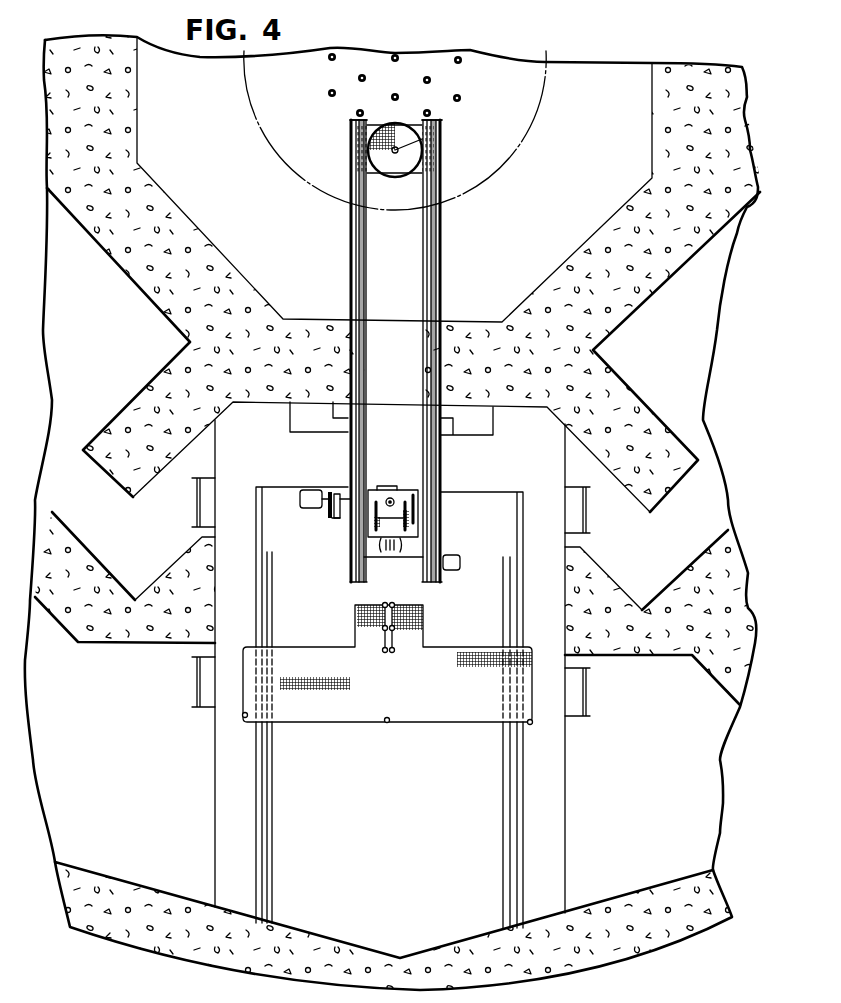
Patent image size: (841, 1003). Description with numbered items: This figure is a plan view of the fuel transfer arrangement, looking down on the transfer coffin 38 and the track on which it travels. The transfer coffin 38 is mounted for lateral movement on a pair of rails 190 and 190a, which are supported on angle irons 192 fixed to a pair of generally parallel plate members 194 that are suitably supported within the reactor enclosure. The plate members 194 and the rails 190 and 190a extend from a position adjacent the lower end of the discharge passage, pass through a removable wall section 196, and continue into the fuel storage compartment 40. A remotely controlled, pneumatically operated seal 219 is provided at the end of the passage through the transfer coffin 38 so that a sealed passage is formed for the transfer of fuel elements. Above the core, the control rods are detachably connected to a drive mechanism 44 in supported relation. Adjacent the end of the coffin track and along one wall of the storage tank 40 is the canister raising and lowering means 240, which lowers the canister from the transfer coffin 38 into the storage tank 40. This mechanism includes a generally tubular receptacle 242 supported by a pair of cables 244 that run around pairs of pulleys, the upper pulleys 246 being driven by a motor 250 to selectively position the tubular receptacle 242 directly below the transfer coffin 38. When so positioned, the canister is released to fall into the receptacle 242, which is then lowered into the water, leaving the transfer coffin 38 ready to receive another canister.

The transfer coffin 38 is at (381, 181).
The fuel storage compartment 40 is at (431, 820).
The drive mechanism 44 is at (462, 61).
The rail 190 is at (350, 248).
The rail 190a is at (442, 229).
The angle irons 192 is at (353, 275).
The plate members 194 is at (354, 302).
The removable wall section 196 is at (448, 435).
The pneumatically operated seal 219 is at (422, 147).
The canister raising and lowering means 240 is at (390, 488).
The tubular receptacle 242 is at (394, 501).
The cables 244 is at (410, 513).
The upper pulleys 246 is at (415, 527).
The motor 250 is at (322, 474).